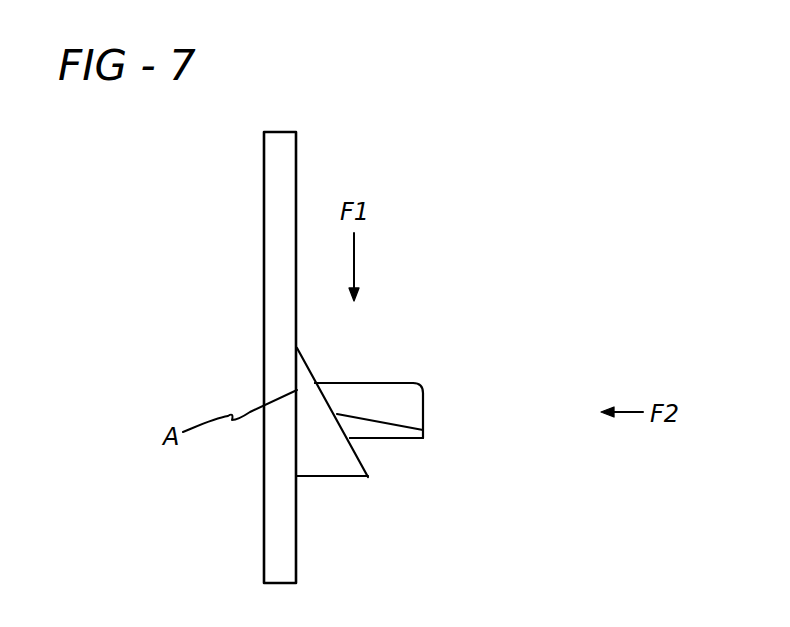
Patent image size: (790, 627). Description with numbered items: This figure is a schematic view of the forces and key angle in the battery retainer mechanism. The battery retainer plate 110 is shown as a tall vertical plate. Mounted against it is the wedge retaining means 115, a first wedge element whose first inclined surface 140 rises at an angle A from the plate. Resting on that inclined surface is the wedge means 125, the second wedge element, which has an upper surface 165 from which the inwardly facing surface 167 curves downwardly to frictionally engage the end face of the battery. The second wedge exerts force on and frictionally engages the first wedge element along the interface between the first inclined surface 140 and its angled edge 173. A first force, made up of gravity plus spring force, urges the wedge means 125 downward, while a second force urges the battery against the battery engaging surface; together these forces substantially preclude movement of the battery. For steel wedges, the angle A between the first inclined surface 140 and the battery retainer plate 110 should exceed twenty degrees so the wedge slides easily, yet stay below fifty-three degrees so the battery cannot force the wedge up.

The battery retainer plate 110 is at (300, 160).
The wedge retaining means 115 is at (372, 482).
The wedge means 125 is at (427, 388).
The first inclined surface 140 is at (362, 458).
The upper surface 165 is at (387, 383).
The inwardly facing surface 167 is at (417, 411).
The angled edge 173 is at (423, 438).